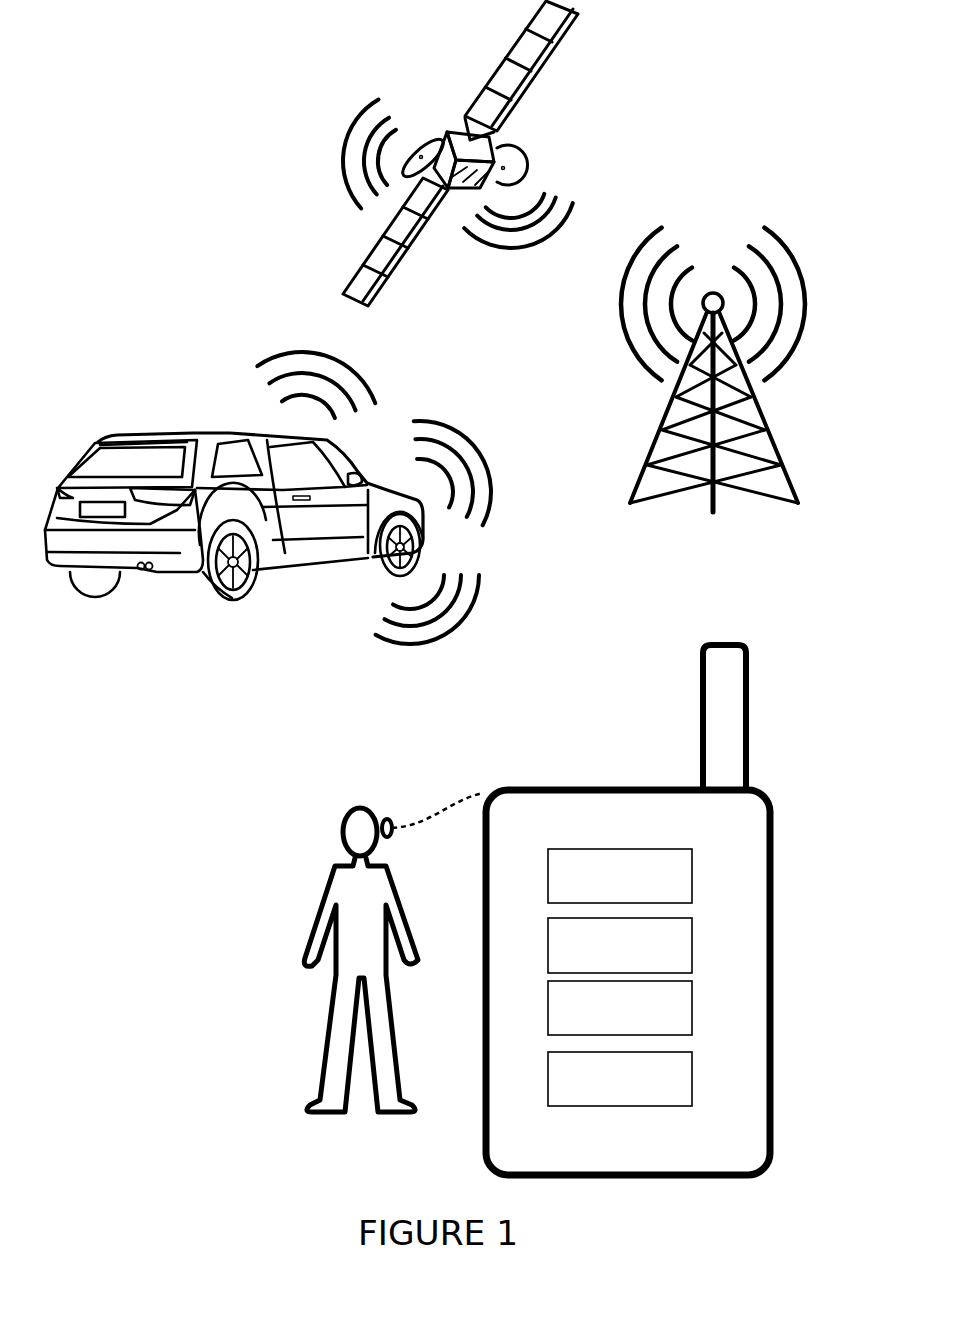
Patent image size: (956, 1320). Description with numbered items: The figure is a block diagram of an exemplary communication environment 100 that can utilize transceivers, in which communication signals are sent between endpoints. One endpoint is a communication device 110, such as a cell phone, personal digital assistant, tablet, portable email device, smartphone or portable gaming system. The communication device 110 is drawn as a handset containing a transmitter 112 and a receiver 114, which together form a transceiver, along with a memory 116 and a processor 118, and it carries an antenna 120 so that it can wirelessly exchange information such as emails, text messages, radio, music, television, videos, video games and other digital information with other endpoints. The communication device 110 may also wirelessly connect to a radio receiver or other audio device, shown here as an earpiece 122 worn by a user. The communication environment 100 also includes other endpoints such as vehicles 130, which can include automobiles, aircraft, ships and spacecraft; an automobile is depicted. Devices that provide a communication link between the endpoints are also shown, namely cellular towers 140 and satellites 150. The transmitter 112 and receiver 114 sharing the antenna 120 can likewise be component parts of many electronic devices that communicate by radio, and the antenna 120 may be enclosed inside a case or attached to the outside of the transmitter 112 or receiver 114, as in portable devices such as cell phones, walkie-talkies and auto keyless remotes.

The communication environment 100 is at (170, 128).
The communication device 110 is at (535, 786).
The transmitter 112 is at (692, 864).
The receiver 114 is at (692, 934).
The memory 116 is at (692, 1003).
The processor 118 is at (692, 1071).
The antenna 120 is at (750, 687).
The earpiece 122 is at (386, 815).
The vehicles 130 is at (203, 432).
The cellular towers 140 is at (713, 292).
The satellites 150 is at (452, 132).